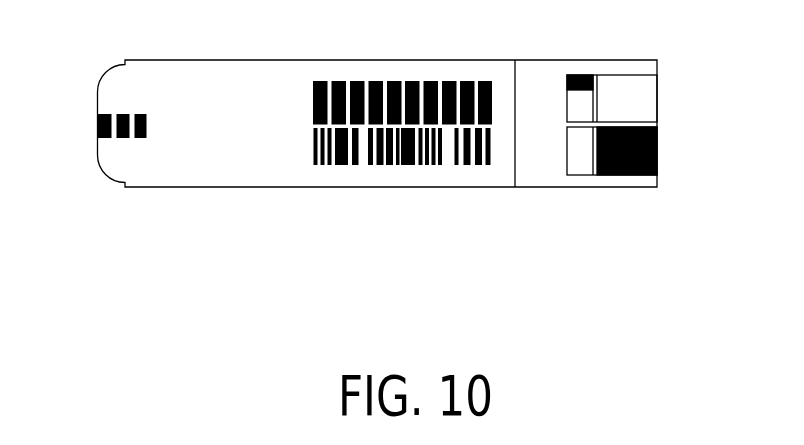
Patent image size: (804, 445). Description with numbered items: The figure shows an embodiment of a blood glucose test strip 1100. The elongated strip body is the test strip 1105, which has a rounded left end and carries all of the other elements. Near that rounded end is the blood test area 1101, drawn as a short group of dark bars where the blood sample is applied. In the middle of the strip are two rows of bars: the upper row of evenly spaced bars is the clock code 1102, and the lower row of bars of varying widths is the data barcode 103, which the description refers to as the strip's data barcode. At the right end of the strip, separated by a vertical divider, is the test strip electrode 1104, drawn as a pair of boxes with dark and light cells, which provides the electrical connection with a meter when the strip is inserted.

The blood glucose test strip 1100 is at (424, 43).
The blood test area 1101 is at (87, 127).
The test strip 1105 is at (143, 124).
The clock code 1102 is at (371, 103).
The lower bar code 103 is at (377, 145).
The test strip electrode 1104 is at (645, 125).